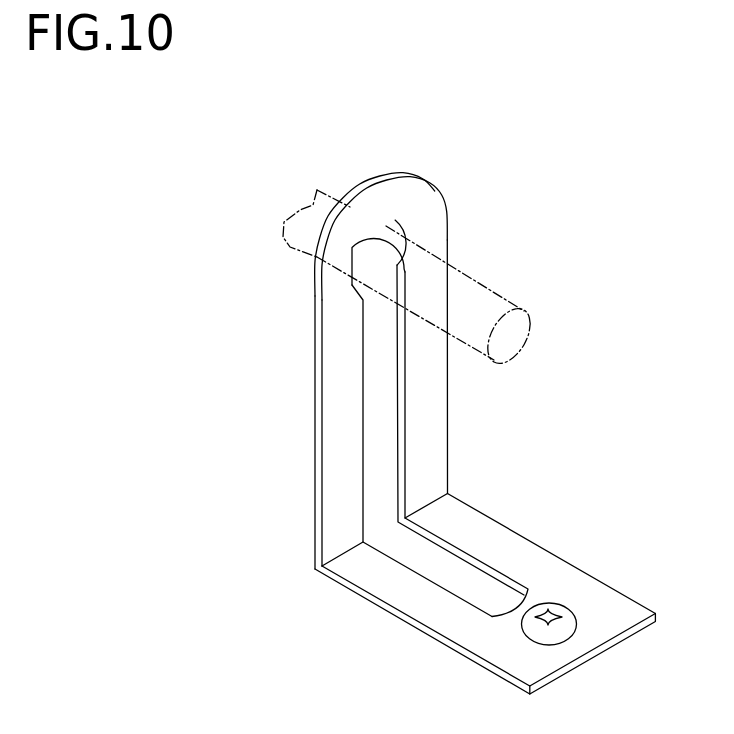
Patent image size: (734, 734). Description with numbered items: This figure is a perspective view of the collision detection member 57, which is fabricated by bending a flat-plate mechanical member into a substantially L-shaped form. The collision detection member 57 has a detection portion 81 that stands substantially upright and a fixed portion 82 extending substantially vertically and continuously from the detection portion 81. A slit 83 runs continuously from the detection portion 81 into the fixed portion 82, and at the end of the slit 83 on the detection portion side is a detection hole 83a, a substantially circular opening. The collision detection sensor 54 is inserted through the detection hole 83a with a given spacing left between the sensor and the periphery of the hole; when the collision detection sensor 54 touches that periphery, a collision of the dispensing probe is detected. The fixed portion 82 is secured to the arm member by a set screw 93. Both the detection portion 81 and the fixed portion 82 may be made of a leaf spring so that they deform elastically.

The collision detection member 57 is at (436, 433).
The detection portion 81 is at (315, 499).
The fixed portion 82 is at (422, 613).
The slit 83 is at (398, 395).
The detection hole 83a is at (412, 245).
The collision detection sensor 54 is at (525, 312).
The set screw 93 is at (566, 616).